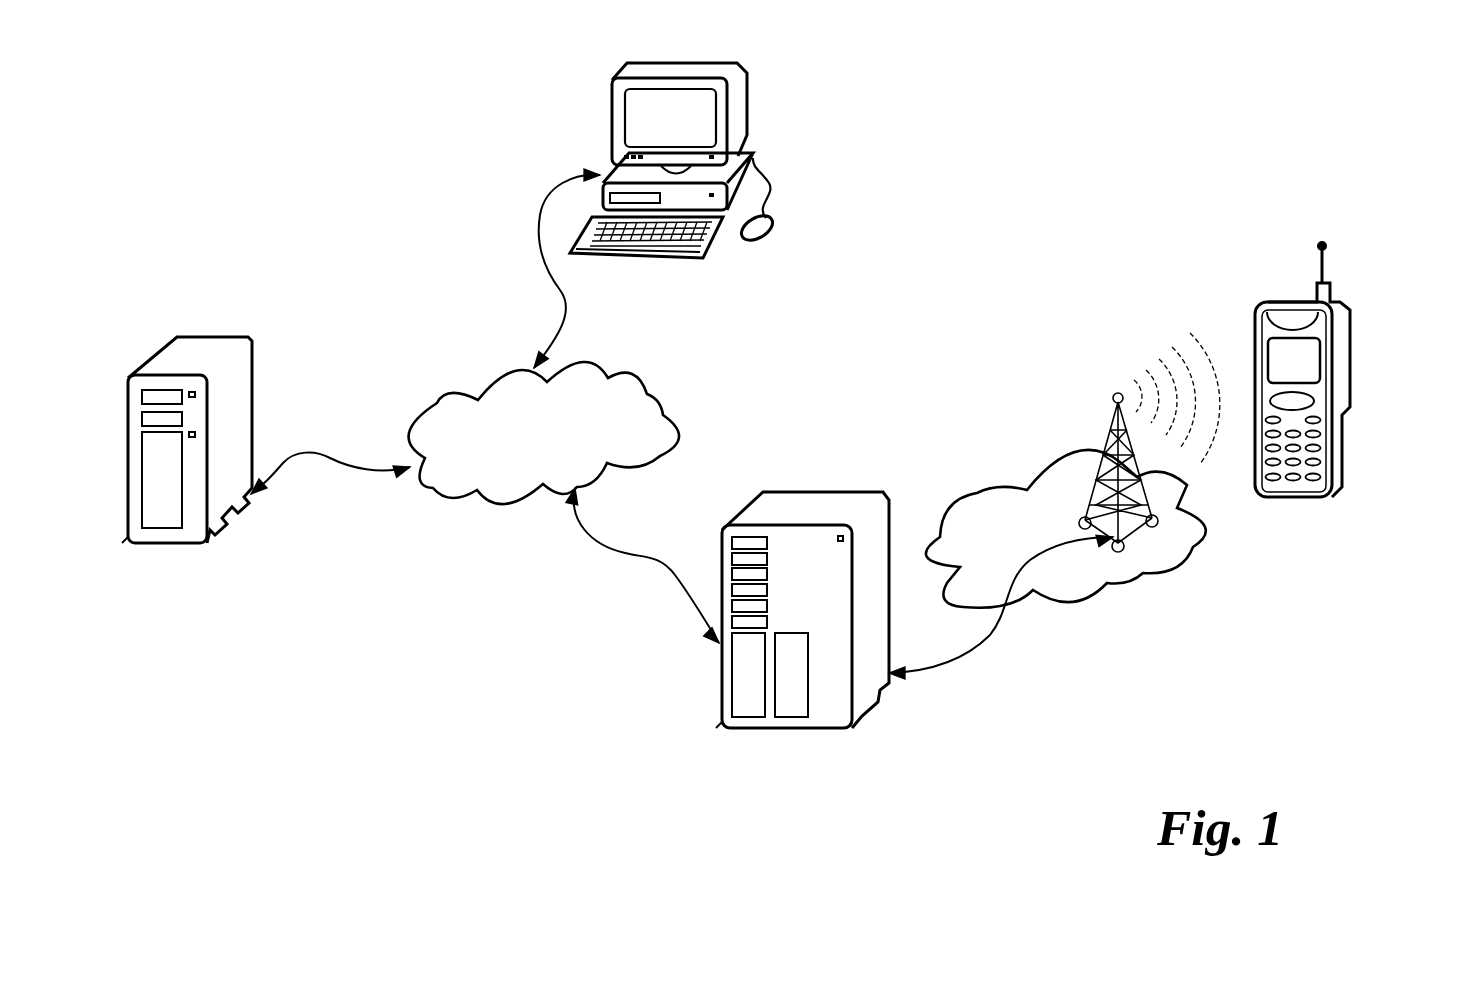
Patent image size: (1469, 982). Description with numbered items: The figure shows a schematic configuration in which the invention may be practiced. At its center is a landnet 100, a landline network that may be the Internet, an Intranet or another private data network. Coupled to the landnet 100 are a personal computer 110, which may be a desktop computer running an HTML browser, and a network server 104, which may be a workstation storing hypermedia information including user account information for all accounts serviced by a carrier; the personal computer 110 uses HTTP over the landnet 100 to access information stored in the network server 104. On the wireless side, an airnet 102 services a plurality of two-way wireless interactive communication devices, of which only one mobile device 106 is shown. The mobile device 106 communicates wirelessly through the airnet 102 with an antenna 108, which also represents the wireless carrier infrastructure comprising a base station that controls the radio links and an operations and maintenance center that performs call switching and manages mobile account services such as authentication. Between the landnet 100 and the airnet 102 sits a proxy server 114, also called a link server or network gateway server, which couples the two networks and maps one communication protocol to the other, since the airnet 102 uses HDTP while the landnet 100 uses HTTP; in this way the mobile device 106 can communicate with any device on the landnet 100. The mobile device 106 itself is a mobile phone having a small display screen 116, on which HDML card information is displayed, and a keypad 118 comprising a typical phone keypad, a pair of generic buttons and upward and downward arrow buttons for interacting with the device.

The landnet 100 is at (663, 415).
The airnet 102 is at (1057, 490).
The network server 104 is at (233, 412).
The mobile device 106 is at (1350, 370).
The antenna 108 is at (1117, 430).
The personal computer 110 is at (755, 160).
The proxy server 114 is at (795, 508).
The display screen 116 is at (1303, 361).
The keypad 118 is at (1303, 440).